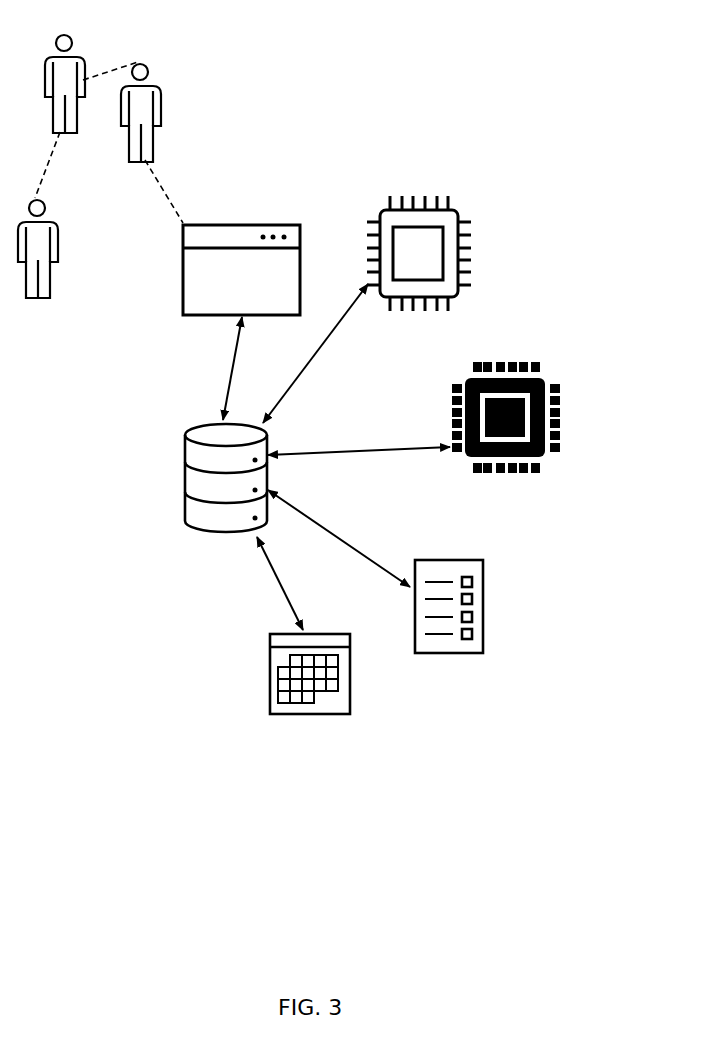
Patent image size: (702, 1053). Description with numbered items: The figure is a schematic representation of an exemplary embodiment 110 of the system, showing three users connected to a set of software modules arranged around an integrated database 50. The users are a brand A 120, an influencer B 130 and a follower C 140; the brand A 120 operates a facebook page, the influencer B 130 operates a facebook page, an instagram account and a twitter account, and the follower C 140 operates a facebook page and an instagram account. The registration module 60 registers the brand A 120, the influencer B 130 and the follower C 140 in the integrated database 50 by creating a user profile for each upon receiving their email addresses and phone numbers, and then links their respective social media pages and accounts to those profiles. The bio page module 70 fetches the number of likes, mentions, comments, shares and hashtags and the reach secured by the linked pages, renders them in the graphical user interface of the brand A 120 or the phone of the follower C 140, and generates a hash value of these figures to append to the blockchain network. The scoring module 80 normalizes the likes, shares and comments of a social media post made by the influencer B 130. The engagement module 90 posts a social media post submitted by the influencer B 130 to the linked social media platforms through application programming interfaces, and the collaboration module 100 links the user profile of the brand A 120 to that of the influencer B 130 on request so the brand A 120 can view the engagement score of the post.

The integrated database 50 is at (245, 422).
The registration module 60 is at (205, 225).
The bio page module 70 is at (457, 208).
The scoring module 80 is at (537, 380).
The engagement module 90 is at (442, 560).
The collaboration module 100 is at (312, 632).
The exemplary embodiment of the system 110 is at (334, 77).
The brand A 120 is at (56, 223).
The influencer B 130 is at (82, 61).
The follower C 140 is at (158, 90).